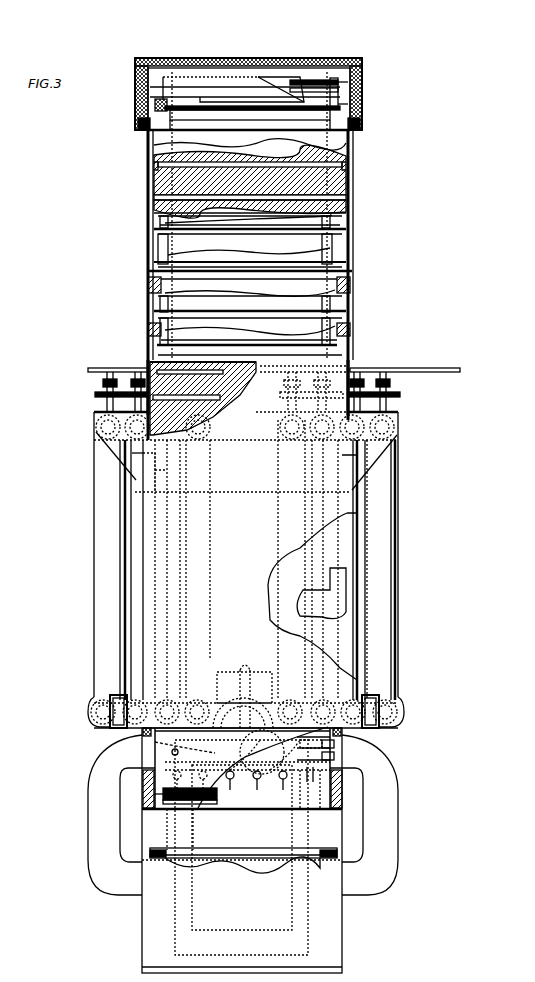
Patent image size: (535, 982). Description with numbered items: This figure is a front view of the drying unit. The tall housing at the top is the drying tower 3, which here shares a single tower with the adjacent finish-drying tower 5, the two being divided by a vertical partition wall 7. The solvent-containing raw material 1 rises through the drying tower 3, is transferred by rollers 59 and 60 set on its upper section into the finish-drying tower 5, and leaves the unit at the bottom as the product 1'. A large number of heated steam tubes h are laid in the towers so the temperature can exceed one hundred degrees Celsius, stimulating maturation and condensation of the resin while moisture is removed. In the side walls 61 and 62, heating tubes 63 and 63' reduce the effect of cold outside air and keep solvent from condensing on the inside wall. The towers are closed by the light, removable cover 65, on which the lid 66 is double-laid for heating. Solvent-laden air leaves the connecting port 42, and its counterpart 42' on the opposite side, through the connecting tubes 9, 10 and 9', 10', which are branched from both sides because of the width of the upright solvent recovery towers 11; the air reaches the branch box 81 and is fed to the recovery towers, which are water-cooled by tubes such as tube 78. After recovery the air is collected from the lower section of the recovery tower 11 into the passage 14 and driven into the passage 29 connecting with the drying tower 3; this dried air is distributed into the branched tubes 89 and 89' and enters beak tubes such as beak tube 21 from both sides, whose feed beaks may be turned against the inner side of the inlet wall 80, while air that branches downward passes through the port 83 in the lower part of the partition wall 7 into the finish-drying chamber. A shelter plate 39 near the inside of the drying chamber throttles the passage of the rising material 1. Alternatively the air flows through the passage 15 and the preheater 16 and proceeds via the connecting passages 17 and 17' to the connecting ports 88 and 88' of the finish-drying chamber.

The lid 66 is at (215, 64).
The cover 65 is at (240, 78).
The roller 59 is at (303, 80).
The roller 60 is at (328, 92).
The finish-drying tower 5 is at (160, 145).
The heating tube 63' is at (224, 172).
The side wall 62 is at (350, 176).
The heated steam tubes h is at (340, 222).
The vertical partition wall 7 is at (318, 292).
The drying tower 3 is at (220, 360).
The raw material 1 is at (300, 329).
The wall of the inlet 80 is at (414, 366).
The tube 78 is at (392, 384).
The heating tube 63 is at (204, 398).
The side wall 61 is at (228, 404).
The branch box 81 is at (108, 445).
The solvent recovery tower 11 is at (122, 484).
The connecting tube 10 is at (231, 570).
The connecting tube 10' is at (353, 595).
The passage 29 is at (244, 658).
The connecting tube 9 is at (98, 692).
The connecting tube 9' is at (394, 692).
The connecting port 42 is at (86, 704).
The support 42' is at (410, 704).
The connecting port 88 is at (143, 741).
The passage 14 is at (172, 745).
The branched tube 89 is at (198, 790).
The connecting passage 17 is at (106, 815).
The connecting passage 17' is at (389, 815).
The product 1' is at (242, 840).
The port 83 is at (232, 790).
The beak tube 21 is at (312, 777).
The shelter plate 39 is at (342, 746).
The connecting port 88' is at (391, 750).
The branched tube 89' is at (396, 777).
The passage 15 is at (292, 910).
The preheater 16 is at (308, 937).